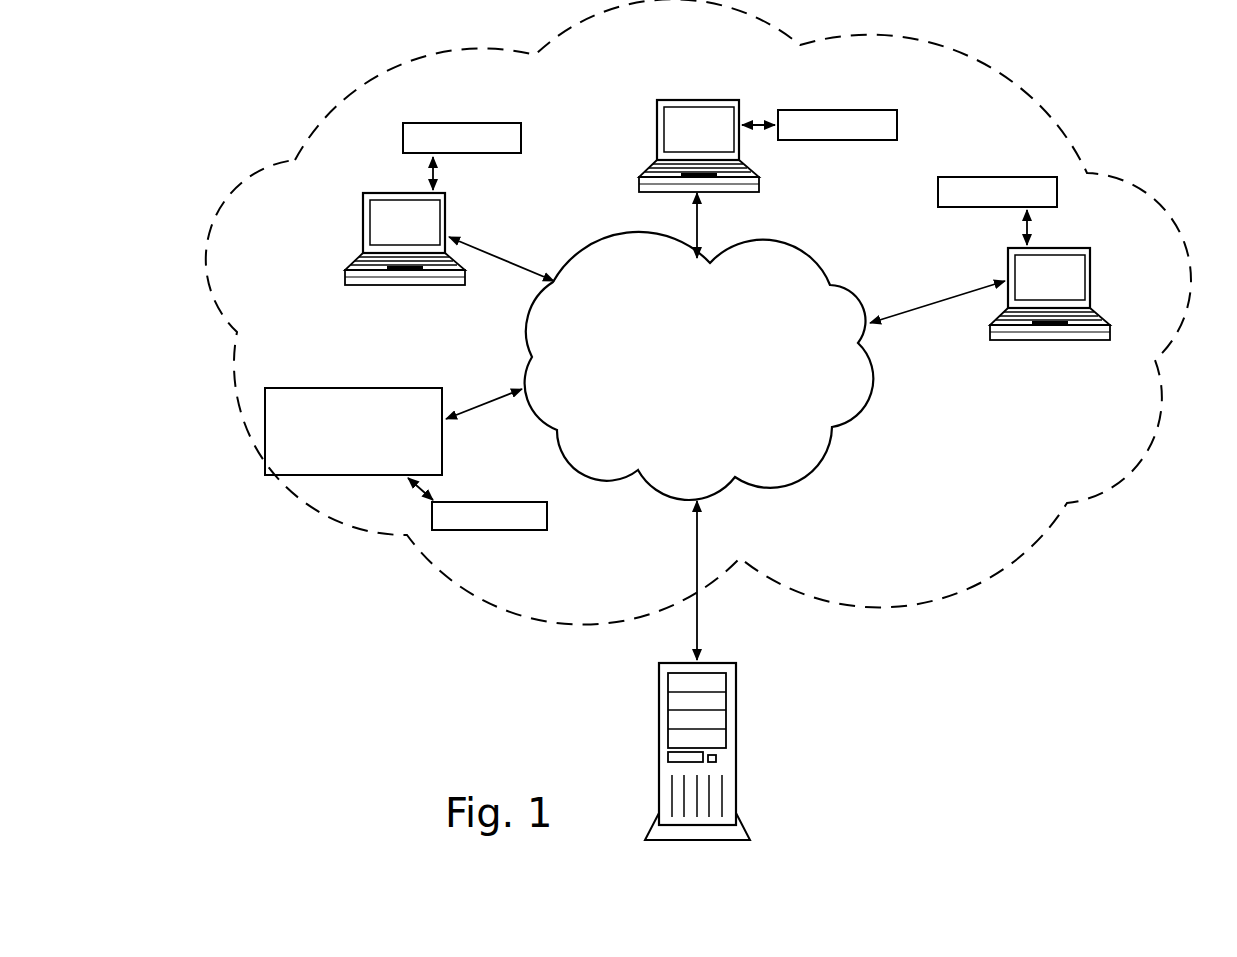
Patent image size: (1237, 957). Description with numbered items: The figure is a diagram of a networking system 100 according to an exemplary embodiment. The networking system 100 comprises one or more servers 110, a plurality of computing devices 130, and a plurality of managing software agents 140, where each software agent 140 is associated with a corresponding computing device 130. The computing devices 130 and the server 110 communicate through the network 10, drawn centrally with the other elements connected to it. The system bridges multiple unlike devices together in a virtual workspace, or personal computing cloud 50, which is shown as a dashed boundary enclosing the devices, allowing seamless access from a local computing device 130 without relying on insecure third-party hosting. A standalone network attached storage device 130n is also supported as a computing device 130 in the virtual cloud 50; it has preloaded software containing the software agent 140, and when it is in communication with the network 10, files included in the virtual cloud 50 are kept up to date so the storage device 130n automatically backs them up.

The network 10 is at (815, 480).
The personal computing cloud 50 is at (425, 561).
The networking system 100 is at (977, 688).
The server 110 is at (735, 734).
The computing device 130 is at (388, 193).
The network attached storage device 130n is at (313, 388).
The software agent 140 is at (477, 123).